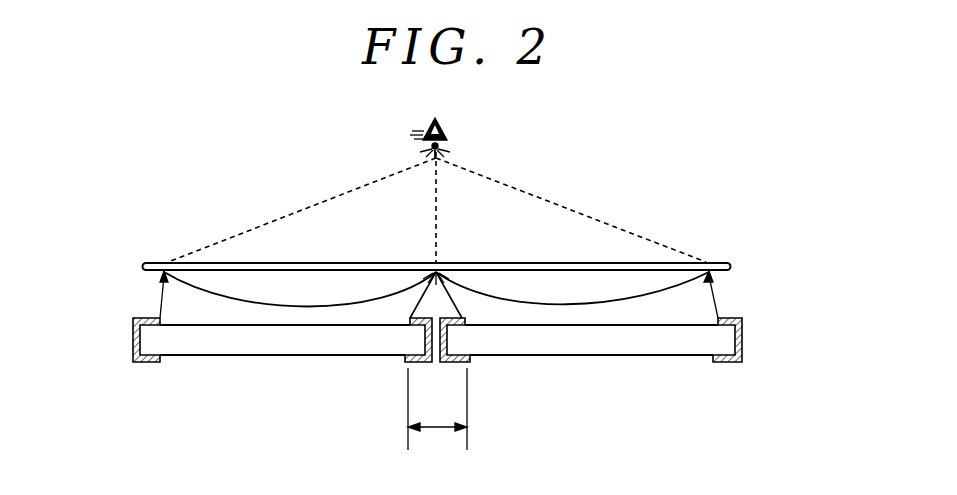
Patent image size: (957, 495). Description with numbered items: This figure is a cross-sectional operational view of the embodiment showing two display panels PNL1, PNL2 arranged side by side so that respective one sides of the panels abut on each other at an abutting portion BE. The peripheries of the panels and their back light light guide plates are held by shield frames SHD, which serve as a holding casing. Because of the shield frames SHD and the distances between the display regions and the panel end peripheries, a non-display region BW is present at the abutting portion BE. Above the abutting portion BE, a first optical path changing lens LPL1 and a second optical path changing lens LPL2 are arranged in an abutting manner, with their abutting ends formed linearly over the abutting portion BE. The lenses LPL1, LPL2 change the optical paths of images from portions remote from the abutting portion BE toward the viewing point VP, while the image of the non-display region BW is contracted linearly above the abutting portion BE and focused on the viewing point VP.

The viewing point VP is at (445, 147).
The first optical path changing lens LPL1 is at (152, 262).
The second optical path changing lens LPL2 is at (716, 262).
The shield frame SHD is at (133, 335).
The first display panel PNL1 is at (233, 352).
The second display panel PNL2 is at (637, 345).
The abutting portion BE is at (441, 374).
The non-display region BW is at (437, 419).